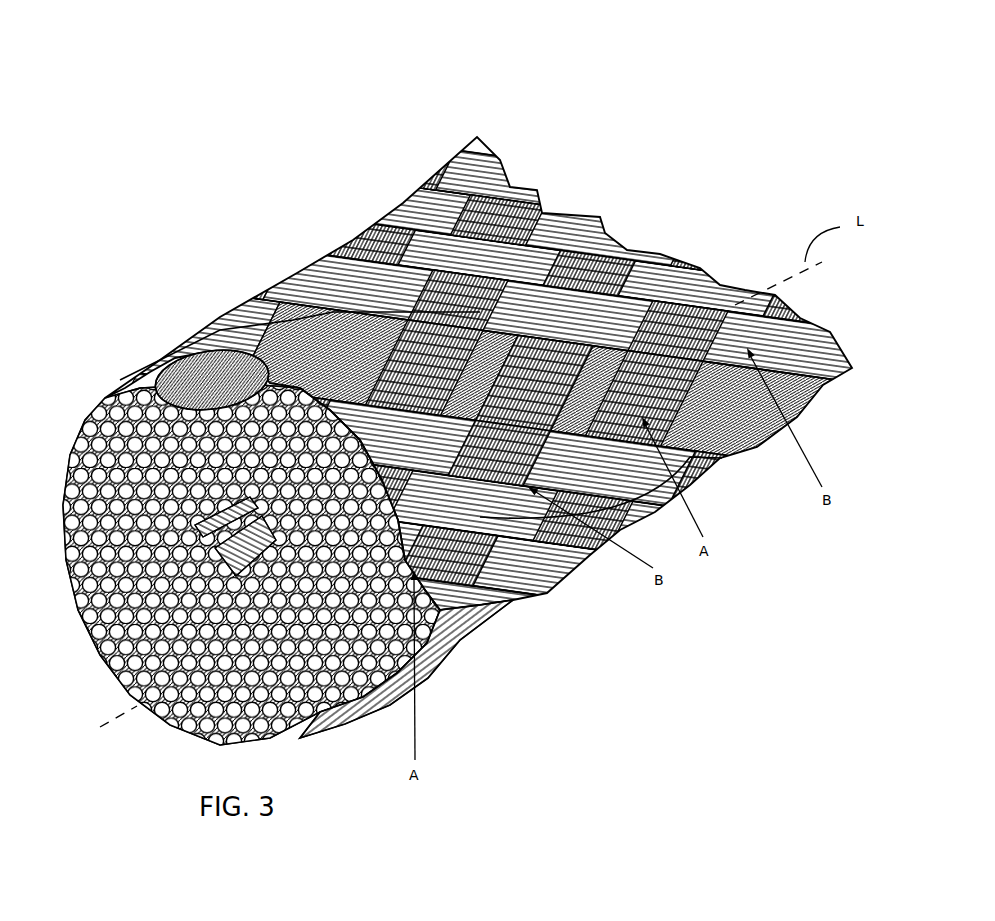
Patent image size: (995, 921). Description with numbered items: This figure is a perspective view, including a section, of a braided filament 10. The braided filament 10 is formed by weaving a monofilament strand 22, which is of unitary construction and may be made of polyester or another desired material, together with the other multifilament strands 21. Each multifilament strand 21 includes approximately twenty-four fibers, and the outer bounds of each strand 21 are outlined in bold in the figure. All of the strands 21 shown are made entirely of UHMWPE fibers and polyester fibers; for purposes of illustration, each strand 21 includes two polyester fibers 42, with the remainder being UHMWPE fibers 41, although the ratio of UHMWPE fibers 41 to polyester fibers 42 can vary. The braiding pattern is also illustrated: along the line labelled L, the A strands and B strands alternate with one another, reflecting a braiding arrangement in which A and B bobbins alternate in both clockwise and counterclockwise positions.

The braided filament 10 is at (100, 193).
The multifilament strand 21 is at (320, 268).
The monofilament strand 22 is at (253, 342).
The UHMWPE fibers 41 is at (430, 585).
The polyester fibers 42 is at (443, 535).